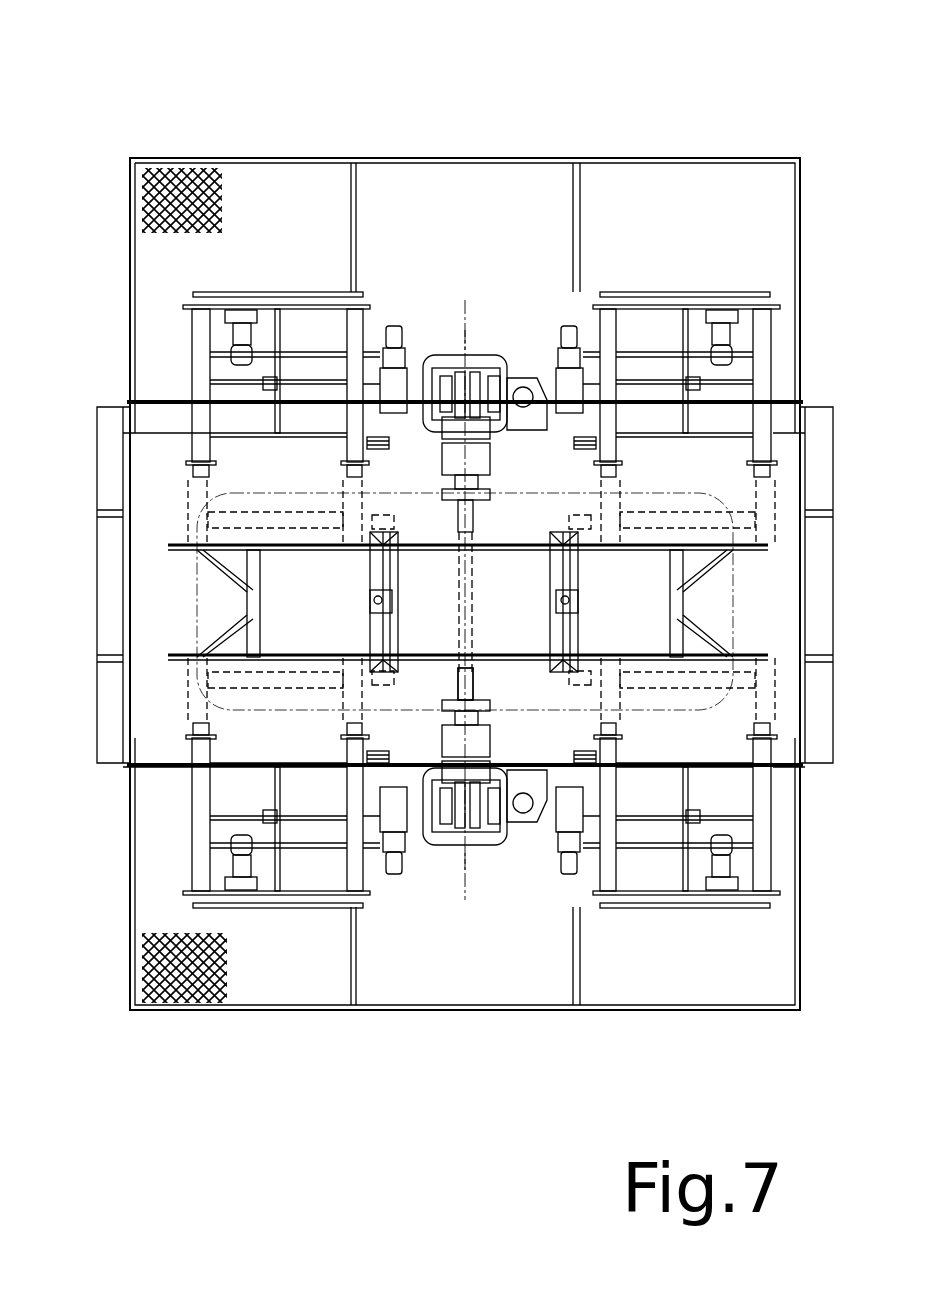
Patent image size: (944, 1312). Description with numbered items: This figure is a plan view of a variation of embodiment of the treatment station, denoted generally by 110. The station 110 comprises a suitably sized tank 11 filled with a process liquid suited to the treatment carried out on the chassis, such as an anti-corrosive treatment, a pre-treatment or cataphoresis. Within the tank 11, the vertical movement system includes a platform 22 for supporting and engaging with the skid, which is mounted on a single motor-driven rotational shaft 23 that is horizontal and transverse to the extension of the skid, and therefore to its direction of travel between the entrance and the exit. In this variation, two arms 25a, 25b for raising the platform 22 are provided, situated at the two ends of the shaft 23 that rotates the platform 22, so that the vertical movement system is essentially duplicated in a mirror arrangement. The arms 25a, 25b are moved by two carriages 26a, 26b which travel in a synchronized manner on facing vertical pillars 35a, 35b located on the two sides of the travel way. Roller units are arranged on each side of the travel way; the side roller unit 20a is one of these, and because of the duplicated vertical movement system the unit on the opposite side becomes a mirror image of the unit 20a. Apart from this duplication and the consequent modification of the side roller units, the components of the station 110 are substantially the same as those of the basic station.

The station 110 is at (742, 84).
The tank 11 is at (790, 455).
The side roller unit 20a is at (782, 313).
The platform 22 is at (620, 615).
The rotational shaft 23 is at (460, 572).
The arm 25a is at (450, 460).
The arm 25b is at (450, 743).
The carriage 26a is at (435, 362).
The carriage 26b is at (445, 837).
The vertical pillar 35a is at (478, 332).
The vertical pillar 35b is at (482, 877).